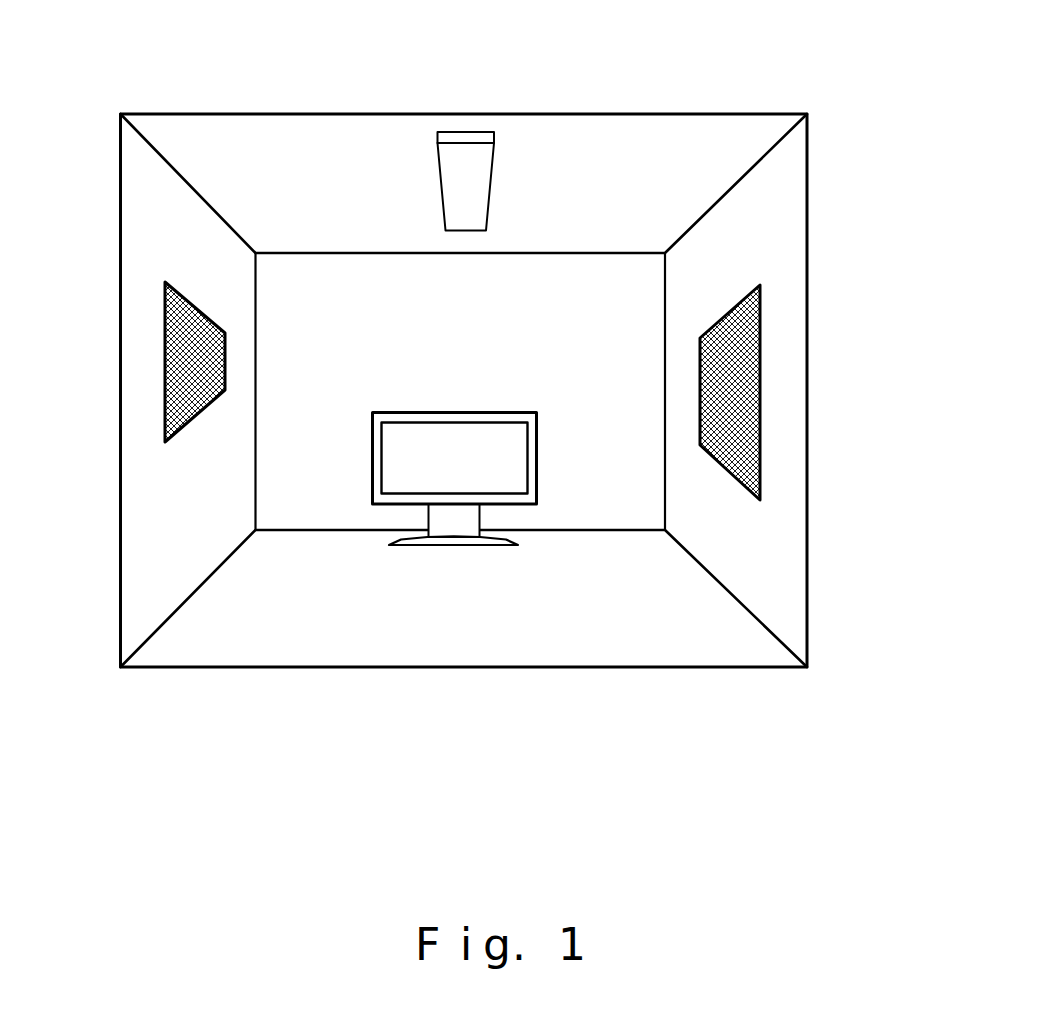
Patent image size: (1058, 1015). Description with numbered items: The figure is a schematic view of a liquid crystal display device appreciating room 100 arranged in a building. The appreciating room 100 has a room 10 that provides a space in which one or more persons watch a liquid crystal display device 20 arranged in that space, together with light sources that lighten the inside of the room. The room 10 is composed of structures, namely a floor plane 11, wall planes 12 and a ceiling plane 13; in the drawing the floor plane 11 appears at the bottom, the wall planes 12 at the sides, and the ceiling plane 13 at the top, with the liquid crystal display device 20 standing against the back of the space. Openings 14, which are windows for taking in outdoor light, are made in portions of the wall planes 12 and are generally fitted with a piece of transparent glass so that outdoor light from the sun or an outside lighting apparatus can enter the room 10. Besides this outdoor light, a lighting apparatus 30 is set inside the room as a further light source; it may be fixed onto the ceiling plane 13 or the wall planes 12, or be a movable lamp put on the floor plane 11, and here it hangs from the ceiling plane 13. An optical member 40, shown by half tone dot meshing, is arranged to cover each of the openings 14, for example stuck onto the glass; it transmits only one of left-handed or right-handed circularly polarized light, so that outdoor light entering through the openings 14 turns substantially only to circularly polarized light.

The liquid crystal display device appreciating room 100 is at (943, 840).
The room 10 is at (618, 667).
The floor plane 11 is at (365, 652).
The wall planes 12 is at (135, 517).
The ceiling plane 13 is at (373, 150).
The openings 14 is at (472, 386).
The liquid crystal display device 20 is at (532, 505).
The lighting apparatus 30 is at (472, 158).
The optical member 40 is at (183, 388).